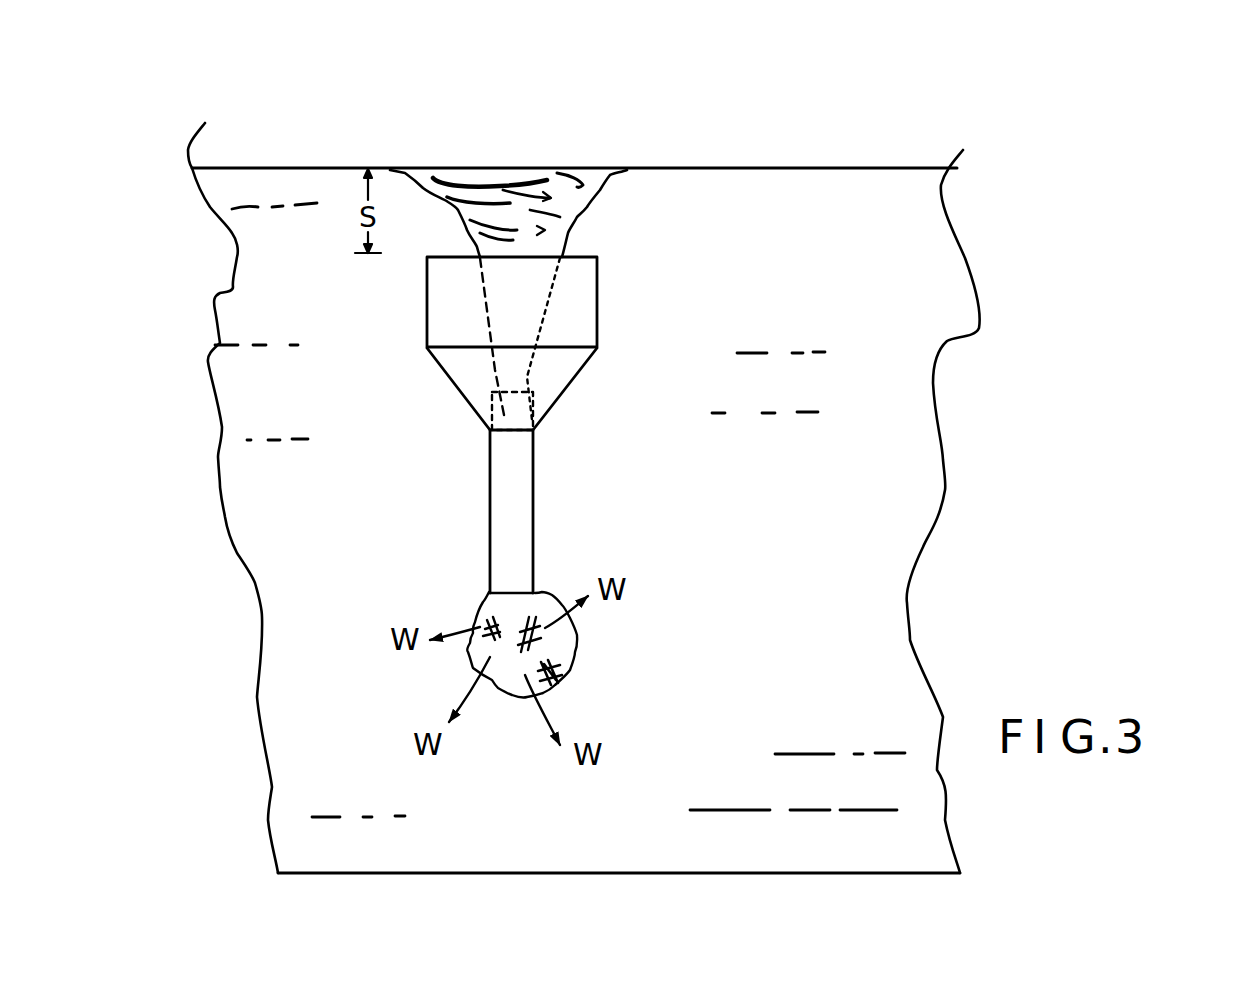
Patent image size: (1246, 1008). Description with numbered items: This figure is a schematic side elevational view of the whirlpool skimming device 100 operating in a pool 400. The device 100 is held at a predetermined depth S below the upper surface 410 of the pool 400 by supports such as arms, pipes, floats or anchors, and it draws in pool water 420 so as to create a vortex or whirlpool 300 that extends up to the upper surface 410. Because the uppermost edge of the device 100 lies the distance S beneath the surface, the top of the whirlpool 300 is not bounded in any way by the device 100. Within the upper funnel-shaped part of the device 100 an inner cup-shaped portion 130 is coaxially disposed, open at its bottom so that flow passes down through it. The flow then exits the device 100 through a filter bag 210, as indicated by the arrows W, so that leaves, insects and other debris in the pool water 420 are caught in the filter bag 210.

The pool 400 is at (192, 268).
The upper surface 410 is at (880, 168).
The pool water 420 is at (882, 469).
The vortex or whirlpool 300 is at (549, 164).
The whirlpool skimming device 100 is at (602, 306).
The inner cup-shaped portion 130 is at (486, 411).
The filter bag 210 is at (573, 669).